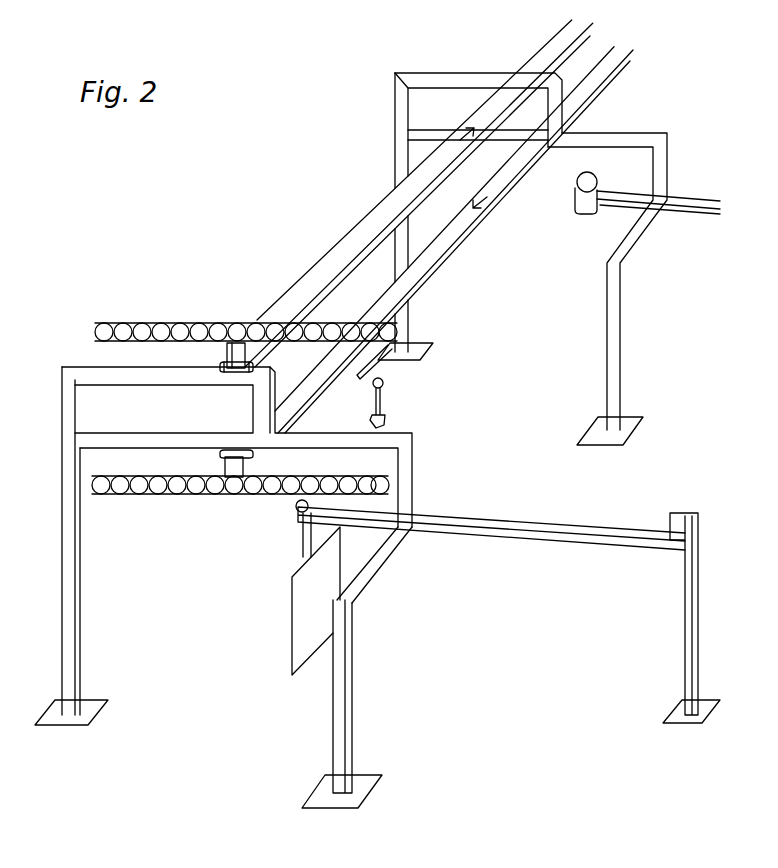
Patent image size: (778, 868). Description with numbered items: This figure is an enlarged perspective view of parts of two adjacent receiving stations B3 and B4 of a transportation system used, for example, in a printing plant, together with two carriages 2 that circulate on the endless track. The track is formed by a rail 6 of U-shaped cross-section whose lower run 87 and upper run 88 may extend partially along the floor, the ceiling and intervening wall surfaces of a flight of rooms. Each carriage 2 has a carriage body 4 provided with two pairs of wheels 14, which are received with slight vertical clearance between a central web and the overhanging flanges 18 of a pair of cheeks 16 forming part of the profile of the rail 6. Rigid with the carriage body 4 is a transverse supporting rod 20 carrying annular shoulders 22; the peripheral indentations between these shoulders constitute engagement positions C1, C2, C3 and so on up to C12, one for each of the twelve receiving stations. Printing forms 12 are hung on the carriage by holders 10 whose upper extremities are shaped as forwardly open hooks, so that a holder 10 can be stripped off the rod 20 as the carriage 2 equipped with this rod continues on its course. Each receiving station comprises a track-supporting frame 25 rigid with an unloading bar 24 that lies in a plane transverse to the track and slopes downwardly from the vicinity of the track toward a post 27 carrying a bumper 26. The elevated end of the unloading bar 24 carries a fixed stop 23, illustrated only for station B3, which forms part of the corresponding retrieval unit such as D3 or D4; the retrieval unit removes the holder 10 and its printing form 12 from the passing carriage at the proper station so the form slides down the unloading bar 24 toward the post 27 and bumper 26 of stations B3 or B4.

The carriage 2 is at (250, 295).
The carriage body 4 is at (244, 340).
The rail 6 is at (326, 258).
The holder 10 is at (300, 548).
The printing form 12 is at (291, 628).
The wheels 14 is at (231, 370).
The cheeks 16 is at (221, 366).
The overhanging flanges 18 is at (228, 361).
The transverse supporting rod 20 is at (238, 493).
The annular shoulders 22 is at (128, 495).
The fixed stop 23 is at (597, 184).
The unloading bar 24 is at (620, 207).
The track-supporting frame 25 is at (614, 132).
The bumper 26 is at (676, 512).
The post 27 is at (690, 627).
The lower run 87 is at (456, 257).
The upper run 88 is at (366, 215).
The receiving station B3 is at (574, 318).
The receiving station B4 is at (199, 633).
The engagement position C1 is at (381, 467).
The engagement position C2 is at (356, 467).
The engagement position C3 is at (331, 467).
The engagement position C12 is at (122, 484).
The retrieval unit D3 is at (566, 219).
The retrieval unit D4 is at (288, 514).